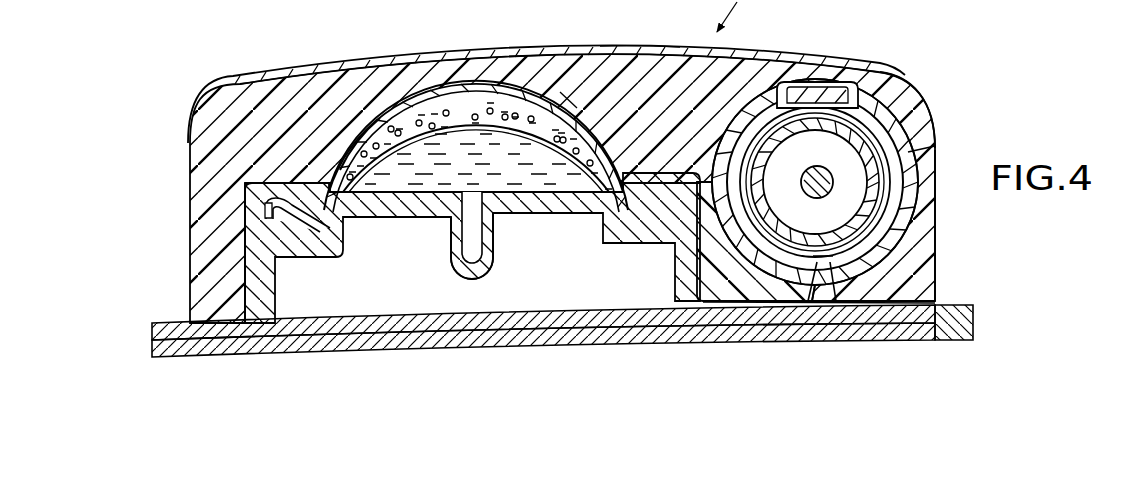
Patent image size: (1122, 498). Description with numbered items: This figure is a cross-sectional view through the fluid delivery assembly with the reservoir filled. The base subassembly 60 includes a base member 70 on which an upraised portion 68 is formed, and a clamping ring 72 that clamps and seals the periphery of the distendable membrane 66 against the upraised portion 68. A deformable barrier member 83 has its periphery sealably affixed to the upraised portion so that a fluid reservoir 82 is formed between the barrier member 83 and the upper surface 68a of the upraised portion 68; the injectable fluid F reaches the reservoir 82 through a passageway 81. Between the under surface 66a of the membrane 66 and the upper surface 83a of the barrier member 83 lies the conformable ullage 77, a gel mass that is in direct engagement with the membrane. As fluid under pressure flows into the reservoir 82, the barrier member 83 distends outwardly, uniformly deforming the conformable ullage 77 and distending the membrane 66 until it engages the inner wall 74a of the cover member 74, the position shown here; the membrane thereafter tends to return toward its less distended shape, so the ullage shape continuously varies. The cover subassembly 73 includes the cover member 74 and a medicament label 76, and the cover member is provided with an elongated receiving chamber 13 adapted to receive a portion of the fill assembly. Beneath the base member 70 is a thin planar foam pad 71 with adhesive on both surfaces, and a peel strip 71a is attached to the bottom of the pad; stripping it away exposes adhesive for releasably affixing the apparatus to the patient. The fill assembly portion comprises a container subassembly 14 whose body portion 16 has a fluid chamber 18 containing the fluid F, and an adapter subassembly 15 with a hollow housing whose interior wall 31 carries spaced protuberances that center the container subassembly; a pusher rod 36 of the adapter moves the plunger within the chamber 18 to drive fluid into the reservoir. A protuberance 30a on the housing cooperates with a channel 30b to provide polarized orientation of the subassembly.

The elongated receiving chamber 13 is at (905, 114).
The container subassembly 14 is at (870, 232).
The adapter subassembly 15 is at (902, 148).
The body portion 16 is at (910, 173).
The fluid chamber 18 is at (815, 182).
The protuberance 30a is at (817, 273).
The channel 30b is at (850, 275).
The interior wall 31 is at (756, 172).
The pusher rod 36 is at (832, 188).
The base subassembly 60 is at (940, 297).
The distendable membrane 66 is at (527, 95).
The under surface of membrane 66a is at (387, 113).
The upraised portion 68 is at (577, 220).
The upper surface of upraised portion 68a is at (411, 193).
The base member 70 is at (715, 308).
The foam pad 71 is at (769, 320).
The peel strip 71a is at (819, 330).
The clamping ring 72 is at (243, 200).
The cover subassembly 73 is at (778, 44).
The cover member 74 is at (910, 92).
The inner wall 74a is at (577, 108).
The medicament label 76 is at (626, 49).
The conformable ullage 77 is at (427, 107).
The passageway 81 is at (472, 253).
The fluid reservoir 82 is at (455, 140).
The deformable barrier member 83 is at (502, 122).
The upper surface of barrier member 83a is at (484, 112).
The injectable fluid F is at (387, 177).